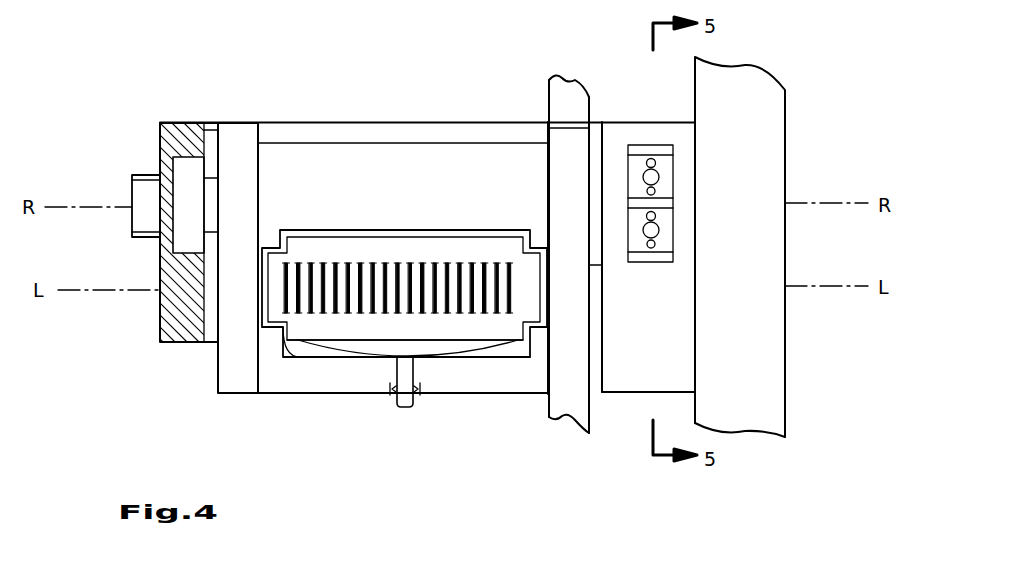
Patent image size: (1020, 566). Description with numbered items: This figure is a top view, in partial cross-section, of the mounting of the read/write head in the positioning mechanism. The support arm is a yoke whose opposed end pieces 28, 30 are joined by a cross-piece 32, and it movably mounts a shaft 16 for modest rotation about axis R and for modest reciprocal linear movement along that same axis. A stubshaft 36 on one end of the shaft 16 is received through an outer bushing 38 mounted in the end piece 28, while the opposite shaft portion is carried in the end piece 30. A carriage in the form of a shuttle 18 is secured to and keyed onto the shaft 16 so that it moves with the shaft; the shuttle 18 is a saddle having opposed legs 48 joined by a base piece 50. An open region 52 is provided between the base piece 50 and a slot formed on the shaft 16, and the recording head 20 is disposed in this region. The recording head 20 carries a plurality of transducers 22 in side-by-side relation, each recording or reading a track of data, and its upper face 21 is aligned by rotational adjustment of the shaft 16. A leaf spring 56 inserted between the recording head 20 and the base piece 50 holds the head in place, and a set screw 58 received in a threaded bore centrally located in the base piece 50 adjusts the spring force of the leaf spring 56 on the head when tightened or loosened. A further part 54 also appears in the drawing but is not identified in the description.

The shaft 16 is at (360, 122).
The shuttle 18 is at (238, 372).
The recording head 20 is at (368, 247).
The upper face 21 is at (472, 327).
The transducers 22 is at (322, 265).
The end piece 28 is at (157, 327).
The end piece 30 is at (677, 367).
The cross-piece 32 is at (489, 122).
The stubshaft 36 is at (143, 193).
The outer bushing 38 is at (190, 172).
The legs 48 is at (183, 127).
The base piece 50 is at (428, 382).
The open region 52 is at (297, 353).
The cover 54 is at (305, 228).
The leaf spring 56 is at (350, 352).
The set screw 58 is at (405, 392).